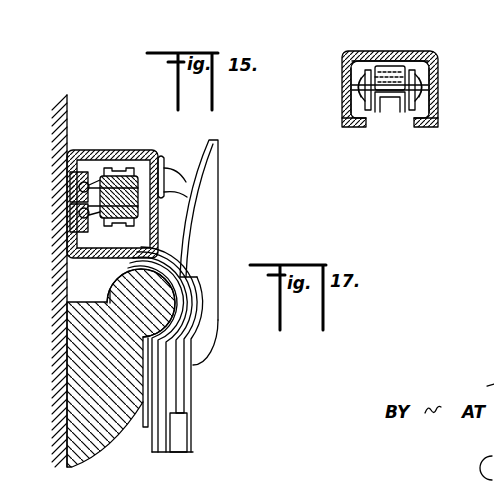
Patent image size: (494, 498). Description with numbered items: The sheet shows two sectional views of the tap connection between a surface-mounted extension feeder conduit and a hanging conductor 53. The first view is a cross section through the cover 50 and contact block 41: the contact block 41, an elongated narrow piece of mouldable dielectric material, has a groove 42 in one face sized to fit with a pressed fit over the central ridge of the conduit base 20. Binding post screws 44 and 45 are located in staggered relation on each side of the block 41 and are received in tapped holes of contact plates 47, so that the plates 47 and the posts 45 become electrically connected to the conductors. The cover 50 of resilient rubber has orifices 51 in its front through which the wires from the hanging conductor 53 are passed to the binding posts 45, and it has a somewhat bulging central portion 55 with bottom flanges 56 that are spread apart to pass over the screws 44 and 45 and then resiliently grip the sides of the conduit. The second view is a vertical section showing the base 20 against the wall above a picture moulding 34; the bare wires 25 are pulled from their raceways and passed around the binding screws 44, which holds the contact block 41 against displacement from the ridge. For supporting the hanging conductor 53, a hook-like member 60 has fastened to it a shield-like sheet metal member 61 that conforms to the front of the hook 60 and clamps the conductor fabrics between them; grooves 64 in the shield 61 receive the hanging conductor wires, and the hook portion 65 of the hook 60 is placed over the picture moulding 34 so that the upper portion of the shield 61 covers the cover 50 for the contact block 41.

In FIG. 17, the base portion 20 is at (67, 204).
In FIG. 17, the bare wires 25 is at (97, 182).
In FIG. 17, the picture moulding 34 is at (93, 382).
In FIG. 17, the contact block 41 is at (133, 205).
In FIG. 15, the contact block 41 is at (389, 73).
In FIG. 15, the groove 42 is at (390, 112).
In FIG. 17, the binding post screw 44 is at (126, 168).
In FIG. 15, the binding post screw 44 is at (415, 84).
In FIG. 15, the binding post screw 45 is at (350, 90).
In FIG. 15, the contact plate 47 is at (363, 103).
In FIG. 17, the cover 50 is at (147, 152).
In FIG. 15, the cover 50 is at (343, 122).
In FIG. 15, the orifice 51 is at (365, 57).
In FIG. 17, the hanging conductor 53 is at (190, 439).
In FIG. 15, the bulging central portion 55 is at (345, 77).
In FIG. 17, the bottom flange 56 is at (67, 173).
In FIG. 15, the bottom flange 56 is at (362, 125).
In FIG. 17, the hook-like member 60 is at (143, 420).
In FIG. 17, the shield-like sheet metal member 61 is at (210, 172).
In FIG. 17, the grooves 64 is at (187, 375).
In FIG. 17, the hook portion 65 is at (172, 312).